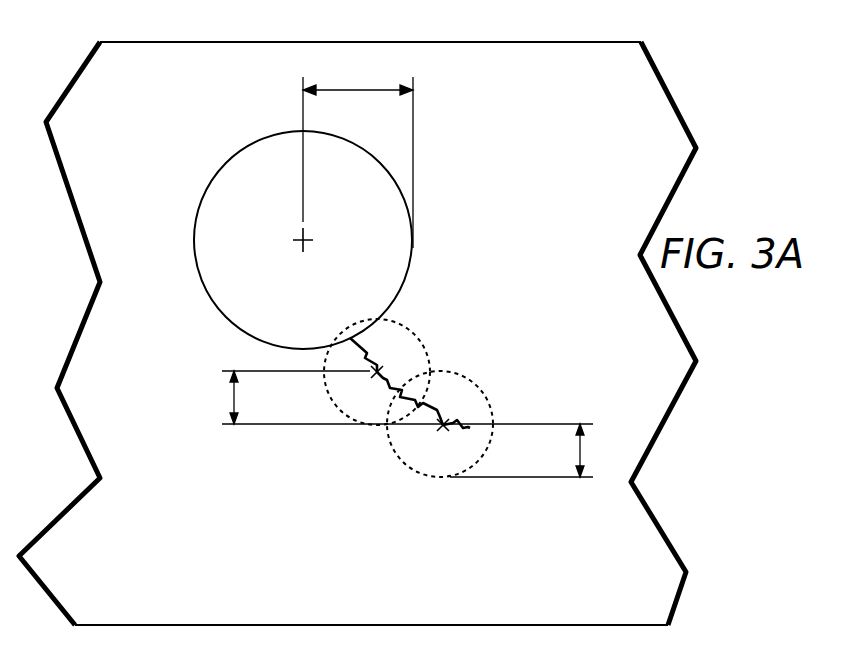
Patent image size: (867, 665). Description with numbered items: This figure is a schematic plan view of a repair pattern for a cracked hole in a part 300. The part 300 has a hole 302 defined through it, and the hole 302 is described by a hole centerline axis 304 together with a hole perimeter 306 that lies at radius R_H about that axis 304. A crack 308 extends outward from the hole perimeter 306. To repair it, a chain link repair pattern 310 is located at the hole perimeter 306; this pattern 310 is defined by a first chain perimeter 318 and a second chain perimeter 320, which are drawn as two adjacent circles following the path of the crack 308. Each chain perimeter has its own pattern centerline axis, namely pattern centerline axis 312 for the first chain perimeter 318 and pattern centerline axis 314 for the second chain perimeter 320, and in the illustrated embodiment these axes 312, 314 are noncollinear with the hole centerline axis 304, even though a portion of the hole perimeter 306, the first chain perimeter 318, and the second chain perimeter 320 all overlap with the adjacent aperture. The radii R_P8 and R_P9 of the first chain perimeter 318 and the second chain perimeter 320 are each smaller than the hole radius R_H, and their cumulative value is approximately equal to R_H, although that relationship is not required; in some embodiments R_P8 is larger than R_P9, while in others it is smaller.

The part 300 is at (513, 55).
The hole 302 is at (373, 202).
The hole centerline axis 304 is at (307, 238).
The hole perimeter 306 is at (240, 196).
The crack 308 is at (370, 351).
The chain link repair pattern 310 is at (490, 382).
The pattern centerline axis 312 is at (377, 372).
The pattern centerline axis 314 is at (443, 425).
The first chain perimeter 318 is at (326, 358).
The second chain perimeter 320 is at (423, 474).